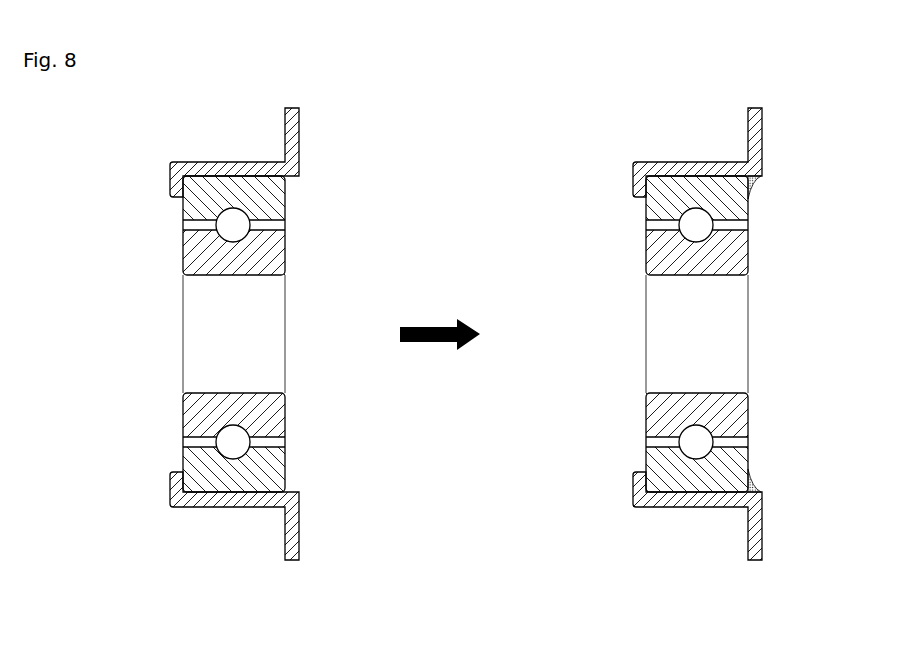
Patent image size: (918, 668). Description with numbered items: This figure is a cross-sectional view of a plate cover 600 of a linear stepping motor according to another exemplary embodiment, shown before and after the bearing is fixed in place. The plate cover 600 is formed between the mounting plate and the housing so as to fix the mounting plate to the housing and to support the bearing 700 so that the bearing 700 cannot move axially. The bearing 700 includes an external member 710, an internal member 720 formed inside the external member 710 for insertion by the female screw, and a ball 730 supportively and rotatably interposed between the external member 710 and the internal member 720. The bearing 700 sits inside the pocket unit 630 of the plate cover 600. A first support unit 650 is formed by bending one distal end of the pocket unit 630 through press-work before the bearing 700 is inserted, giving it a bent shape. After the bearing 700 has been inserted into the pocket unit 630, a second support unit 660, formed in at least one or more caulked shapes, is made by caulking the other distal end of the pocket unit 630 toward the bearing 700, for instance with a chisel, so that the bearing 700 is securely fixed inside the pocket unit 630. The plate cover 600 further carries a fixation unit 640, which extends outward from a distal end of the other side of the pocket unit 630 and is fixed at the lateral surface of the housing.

The plate cover 600 is at (457, 355).
The pocket unit 630 is at (240, 488).
The fixation unit 640 is at (293, 128).
The first support unit 650 is at (177, 184).
The second support unit 660 is at (753, 190).
The bearing 700 is at (385, 334).
The external member 710 is at (213, 191).
The internal member 720 is at (225, 417).
The ball 730 is at (230, 446).